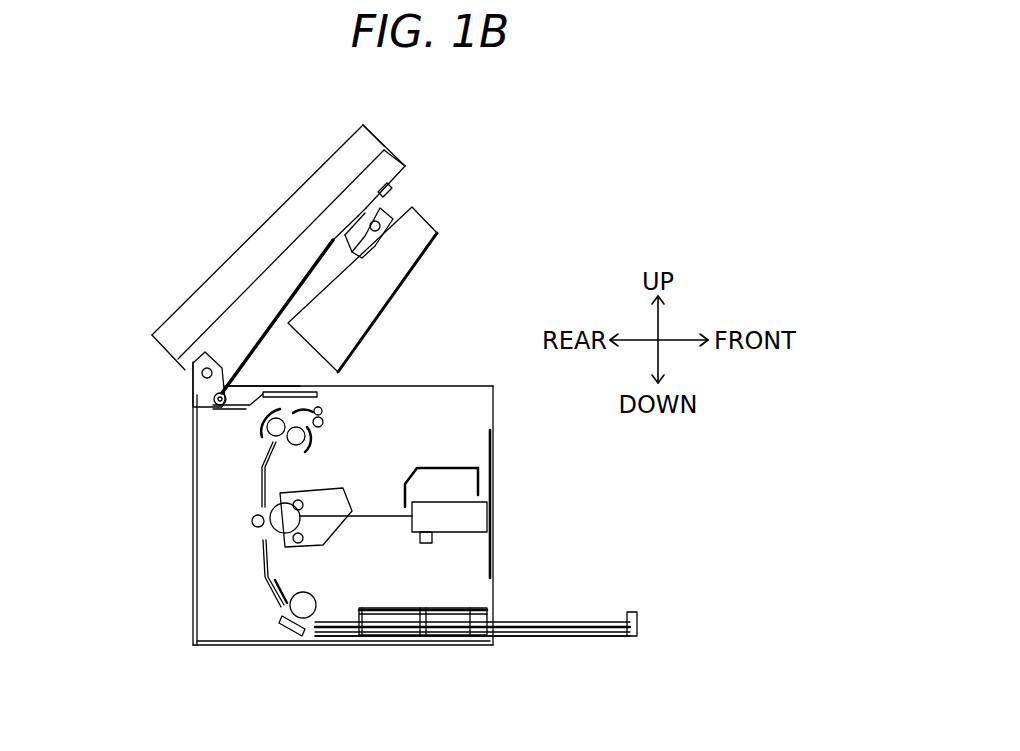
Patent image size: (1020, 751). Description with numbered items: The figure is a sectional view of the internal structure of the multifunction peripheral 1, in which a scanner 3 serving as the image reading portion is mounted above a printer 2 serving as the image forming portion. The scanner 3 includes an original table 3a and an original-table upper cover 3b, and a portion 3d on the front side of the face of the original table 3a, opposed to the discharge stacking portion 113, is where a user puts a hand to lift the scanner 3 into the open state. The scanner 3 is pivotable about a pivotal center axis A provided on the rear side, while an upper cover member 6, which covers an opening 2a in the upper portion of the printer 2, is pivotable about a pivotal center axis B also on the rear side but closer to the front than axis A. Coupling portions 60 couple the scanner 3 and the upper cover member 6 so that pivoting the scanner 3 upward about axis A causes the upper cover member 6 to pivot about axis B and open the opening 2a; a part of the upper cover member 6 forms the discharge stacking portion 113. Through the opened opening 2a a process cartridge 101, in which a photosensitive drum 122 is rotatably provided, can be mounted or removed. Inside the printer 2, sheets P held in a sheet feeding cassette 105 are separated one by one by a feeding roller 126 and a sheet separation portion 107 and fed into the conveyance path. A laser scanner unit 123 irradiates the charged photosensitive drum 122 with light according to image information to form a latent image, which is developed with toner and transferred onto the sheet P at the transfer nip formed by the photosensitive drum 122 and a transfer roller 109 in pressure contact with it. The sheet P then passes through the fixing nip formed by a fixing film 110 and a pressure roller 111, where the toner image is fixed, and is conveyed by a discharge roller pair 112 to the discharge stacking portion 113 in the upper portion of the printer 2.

The multifunction peripheral 1 is at (500, 263).
The printer 2 is at (331, 668).
The opening 2a is at (487, 368).
The scanner 3 is at (220, 242).
The original table 3a is at (388, 156).
The original-table upper cover 3b is at (364, 127).
The portion 3d is at (394, 182).
The upper cover member 6 is at (442, 213).
The coupling portions 60 is at (392, 212).
The process cartridge 101 is at (363, 622).
The sheet feeding cassette 105 is at (548, 638).
The sheet separation portion 107 is at (293, 628).
The transfer roller 109 is at (258, 521).
The fixing film 110 is at (306, 435).
The pressure roller 111 is at (264, 432).
The discharge roller pair 112 is at (322, 412).
The discharge stacking portion 113 is at (402, 283).
The photosensitive drum 122 is at (262, 545).
The laser scanner unit 123 is at (467, 520).
The feeding roller 126 is at (296, 607).
The pivotal center axis A is at (195, 373).
The pivotal center axis B is at (213, 399).
The sheet P is at (507, 622).